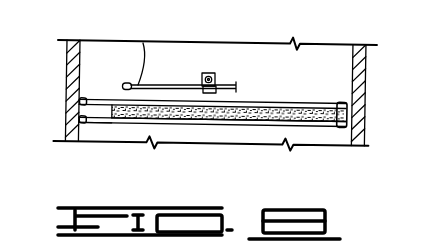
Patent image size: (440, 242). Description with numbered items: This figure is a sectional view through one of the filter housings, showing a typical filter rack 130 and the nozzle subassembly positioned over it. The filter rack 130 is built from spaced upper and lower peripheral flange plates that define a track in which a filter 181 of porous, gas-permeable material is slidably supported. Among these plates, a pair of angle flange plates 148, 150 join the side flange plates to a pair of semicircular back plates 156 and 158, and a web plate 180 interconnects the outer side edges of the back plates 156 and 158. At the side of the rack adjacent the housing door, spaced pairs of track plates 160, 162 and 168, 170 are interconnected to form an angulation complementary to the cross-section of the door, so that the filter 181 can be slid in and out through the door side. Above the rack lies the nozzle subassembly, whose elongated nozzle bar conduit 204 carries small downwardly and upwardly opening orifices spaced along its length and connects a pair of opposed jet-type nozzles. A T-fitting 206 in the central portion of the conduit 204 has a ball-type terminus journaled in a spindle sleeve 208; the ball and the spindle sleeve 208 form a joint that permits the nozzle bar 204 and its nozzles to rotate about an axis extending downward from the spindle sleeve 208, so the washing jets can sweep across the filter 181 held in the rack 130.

The filter rack 130 is at (342, 101).
The angle flange plate 148 is at (255, 107).
The angle flange plate 150 is at (216, 117).
The semicircular back plate 156 is at (310, 108).
The semicircular back plate 158 is at (318, 128).
The track plate 160 is at (113, 103).
The track plate 162 is at (106, 123).
The track plate 168 is at (84, 98).
The track plate 170 is at (82, 123).
The web plate 180 is at (350, 117).
The filter 181 is at (212, 127).
The nozzle bar conduit 204 is at (140, 41).
The T-fitting 206 is at (202, 95).
The spindle sleeve 208 is at (207, 70).